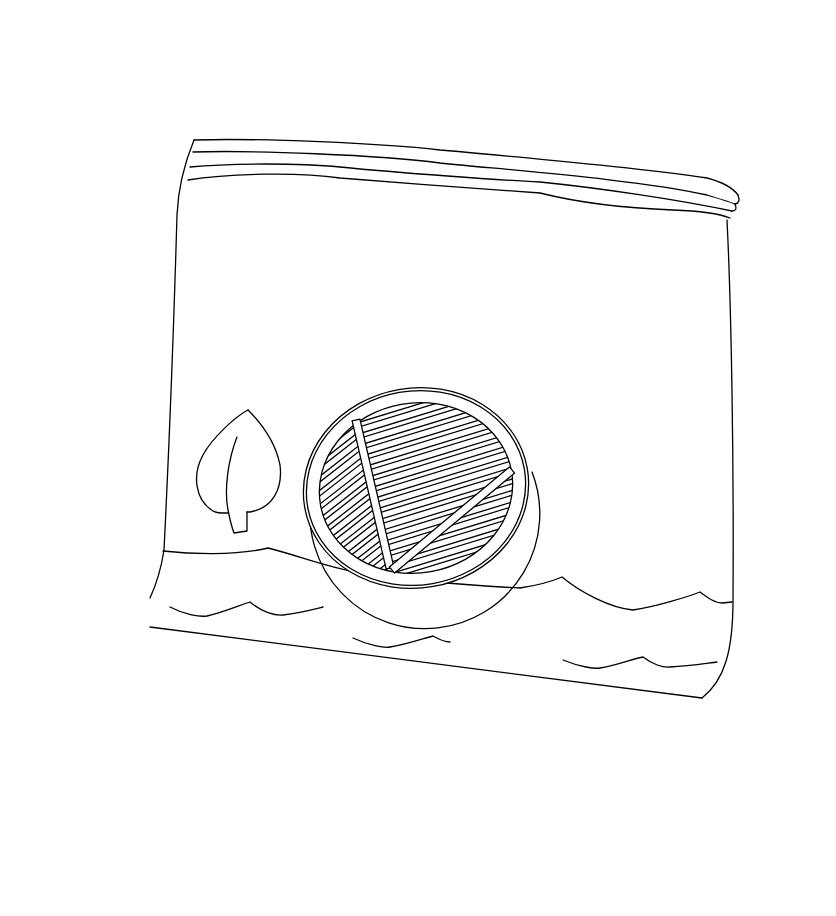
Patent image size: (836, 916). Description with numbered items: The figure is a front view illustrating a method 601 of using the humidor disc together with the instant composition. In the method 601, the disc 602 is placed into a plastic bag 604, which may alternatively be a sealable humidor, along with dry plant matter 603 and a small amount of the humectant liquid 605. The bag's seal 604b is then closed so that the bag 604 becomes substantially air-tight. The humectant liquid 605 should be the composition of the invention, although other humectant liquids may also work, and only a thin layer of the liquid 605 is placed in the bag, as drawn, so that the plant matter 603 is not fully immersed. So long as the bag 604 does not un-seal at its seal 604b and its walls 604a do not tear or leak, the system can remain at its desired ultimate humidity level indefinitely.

The method 601 is at (470, 38).
The disc 602 is at (525, 450).
The dry plant matter 603 is at (207, 442).
The plastic bag 604 is at (163, 215).
The walls 604a is at (172, 323).
The seal 604b is at (212, 132).
The humectant liquid 605 is at (670, 667).